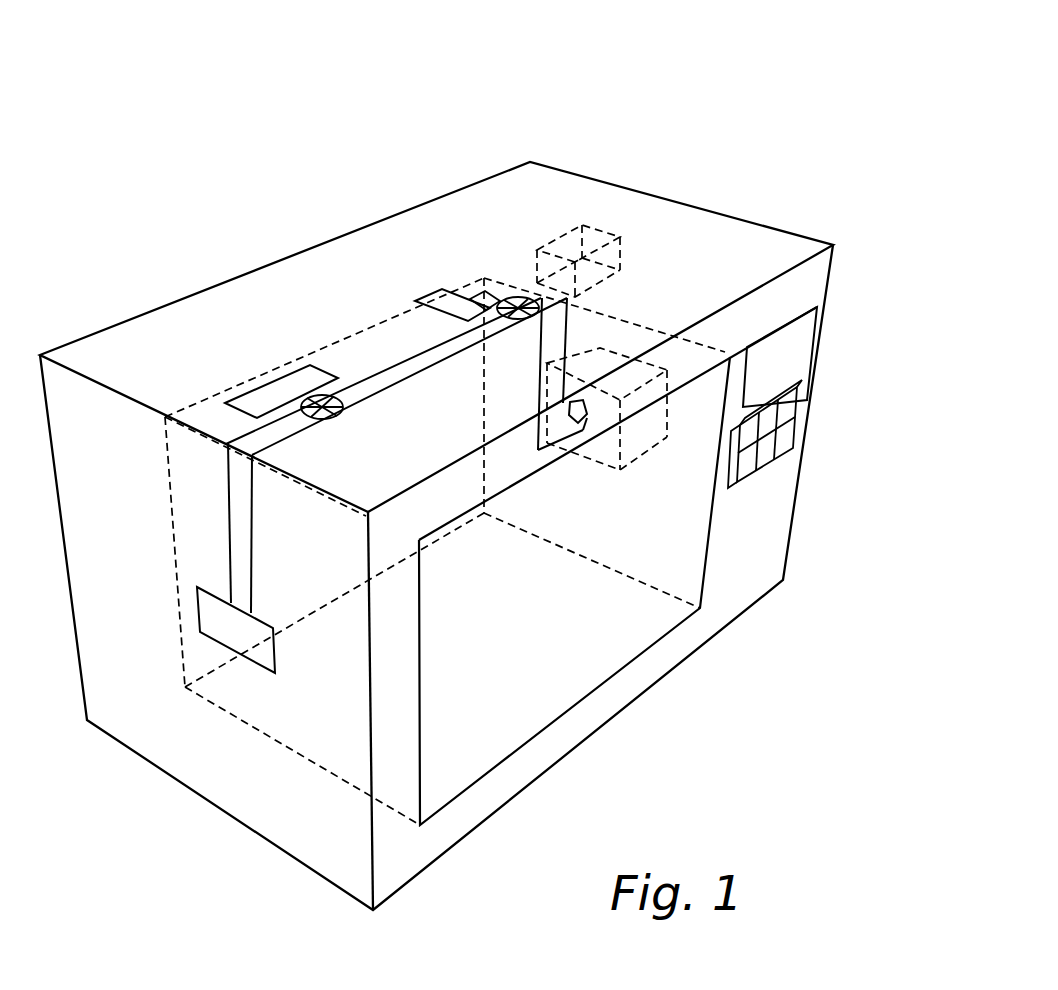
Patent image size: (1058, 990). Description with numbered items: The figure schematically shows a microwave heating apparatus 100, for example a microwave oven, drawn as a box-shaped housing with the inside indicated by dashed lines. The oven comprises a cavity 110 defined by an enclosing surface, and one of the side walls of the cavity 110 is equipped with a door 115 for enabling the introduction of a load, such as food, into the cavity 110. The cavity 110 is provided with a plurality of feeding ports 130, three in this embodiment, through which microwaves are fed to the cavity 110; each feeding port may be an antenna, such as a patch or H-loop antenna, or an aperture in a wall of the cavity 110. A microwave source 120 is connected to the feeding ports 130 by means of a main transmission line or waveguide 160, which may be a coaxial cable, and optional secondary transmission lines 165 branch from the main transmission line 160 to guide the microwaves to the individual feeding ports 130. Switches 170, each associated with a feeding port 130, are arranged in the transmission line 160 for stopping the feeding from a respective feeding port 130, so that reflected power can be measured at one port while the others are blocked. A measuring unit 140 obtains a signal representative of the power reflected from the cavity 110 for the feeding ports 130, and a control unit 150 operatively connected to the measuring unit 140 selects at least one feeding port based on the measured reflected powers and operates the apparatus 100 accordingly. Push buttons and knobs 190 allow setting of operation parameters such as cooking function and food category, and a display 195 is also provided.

The microwave heating apparatus 100 is at (741, 149).
The cavity 110 is at (518, 606).
The door 115 is at (645, 620).
The microwave source 120 is at (633, 445).
The feeding ports 130 is at (247, 405).
The measuring unit 140 is at (560, 243).
The control unit 150 is at (593, 230).
The transmission line 160 is at (372, 383).
The secondary transmission lines 165 is at (472, 292).
The switches 170 is at (338, 418).
The push buttons and knobs 190 is at (775, 425).
The display 195 is at (800, 340).